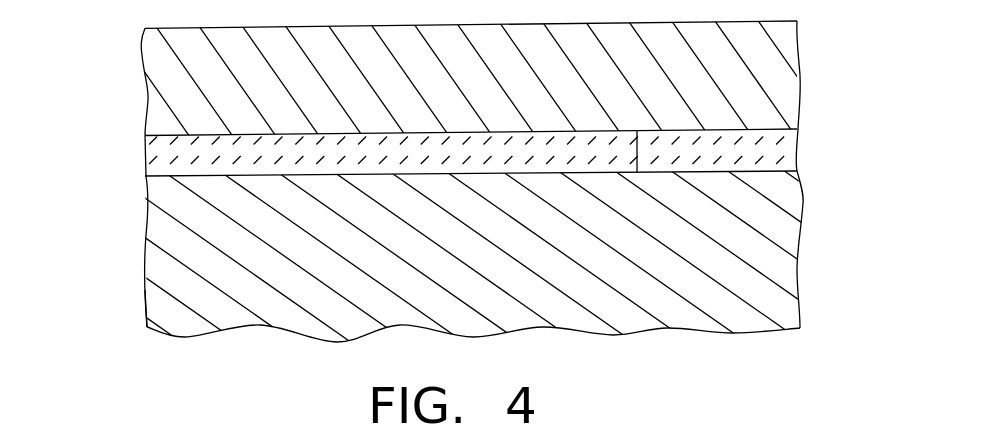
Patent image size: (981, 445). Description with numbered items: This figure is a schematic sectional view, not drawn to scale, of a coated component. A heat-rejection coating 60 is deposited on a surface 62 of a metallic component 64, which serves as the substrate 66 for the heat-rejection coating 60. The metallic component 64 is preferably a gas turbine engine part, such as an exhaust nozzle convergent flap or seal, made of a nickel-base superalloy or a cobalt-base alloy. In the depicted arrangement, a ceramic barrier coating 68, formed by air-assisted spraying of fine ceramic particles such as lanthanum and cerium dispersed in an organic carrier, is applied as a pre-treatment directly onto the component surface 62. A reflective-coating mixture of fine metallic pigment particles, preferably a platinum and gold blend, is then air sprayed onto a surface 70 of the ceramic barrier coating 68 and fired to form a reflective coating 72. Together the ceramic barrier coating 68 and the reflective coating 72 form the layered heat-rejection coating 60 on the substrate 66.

The heat-rejection coating 60 is at (133, 28).
The surface 62 is at (637, 130).
The metallic component 64 is at (153, 305).
The substrate 66 is at (110, 180).
The ceramic barrier coating 68 is at (778, 153).
The surface of the ceramic barrier coating 70 is at (769, 129).
The reflective coating 72 is at (767, 50).